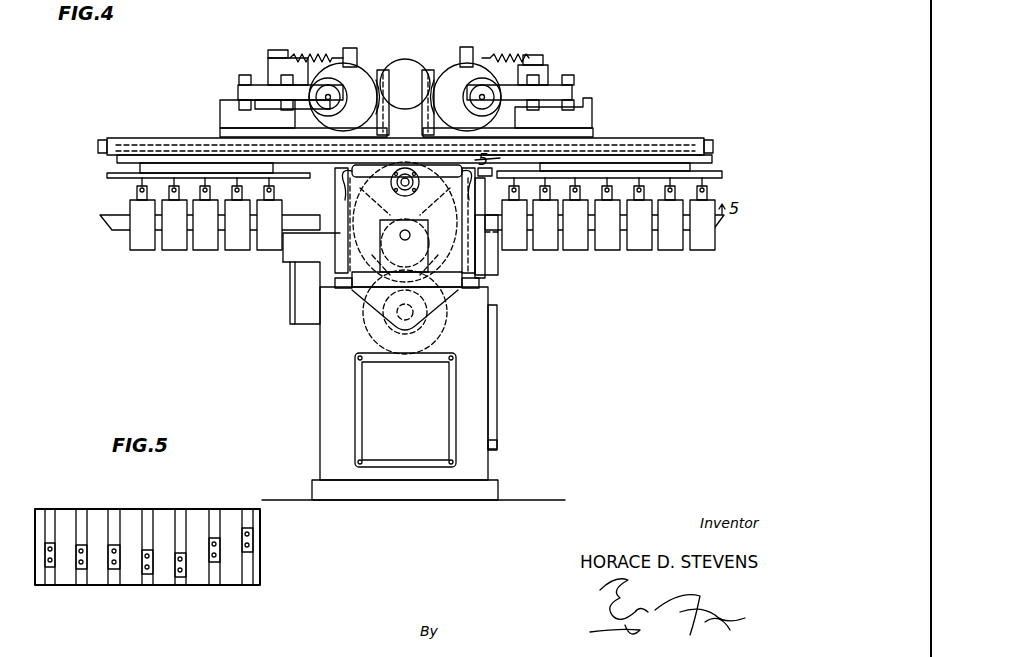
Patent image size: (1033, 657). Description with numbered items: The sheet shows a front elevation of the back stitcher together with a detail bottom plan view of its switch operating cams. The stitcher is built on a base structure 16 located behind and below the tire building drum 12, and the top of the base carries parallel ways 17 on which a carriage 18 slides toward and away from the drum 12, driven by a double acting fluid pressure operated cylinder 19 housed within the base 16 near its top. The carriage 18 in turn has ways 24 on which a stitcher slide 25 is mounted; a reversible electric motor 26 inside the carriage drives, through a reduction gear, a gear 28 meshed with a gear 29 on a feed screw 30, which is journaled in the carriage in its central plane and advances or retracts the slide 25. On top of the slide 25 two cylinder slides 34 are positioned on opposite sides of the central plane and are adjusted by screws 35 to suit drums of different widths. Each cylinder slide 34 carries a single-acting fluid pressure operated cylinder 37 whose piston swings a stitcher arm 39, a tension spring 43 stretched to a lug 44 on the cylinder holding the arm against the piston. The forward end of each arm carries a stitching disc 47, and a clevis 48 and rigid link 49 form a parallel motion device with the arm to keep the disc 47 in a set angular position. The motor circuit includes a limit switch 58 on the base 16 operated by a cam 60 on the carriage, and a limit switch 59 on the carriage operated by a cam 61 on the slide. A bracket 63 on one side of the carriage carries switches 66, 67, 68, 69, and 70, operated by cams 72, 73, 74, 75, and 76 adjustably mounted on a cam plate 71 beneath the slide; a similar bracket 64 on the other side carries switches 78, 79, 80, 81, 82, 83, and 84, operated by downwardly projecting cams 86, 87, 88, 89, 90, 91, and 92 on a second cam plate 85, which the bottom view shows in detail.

In FIG. 4, the drum 12 is at (392, 62).
In FIG. 4, the base structure 16 is at (493, 355).
In FIG. 4, the ways 17 is at (340, 288).
In FIG. 4, the carriage 18 is at (340, 235).
In FIG. 4, the double acting fluid pressure operated cylinder 19 is at (440, 330).
In FIG. 4, the ways 24 is at (407, 218).
In FIG. 4, the stitcher slide 25 is at (660, 138).
In FIG. 4, the reversible electric motor 26 is at (415, 264).
In FIG. 4, the gear 28 is at (404, 245).
In FIG. 4, the gear 29 is at (409, 222).
In FIG. 4, the feed screw 30 is at (405, 196).
In FIG. 4, the cylinder slides 34 is at (220, 128).
In FIG. 4, the adjusting screws 35 is at (98, 146).
In FIG. 4, the single-acting fluid pressure operated cylinders 37 is at (362, 68).
In FIG. 4, the stitcher arms 39 is at (268, 68).
In FIG. 4, the tension spring 43 is at (302, 52).
In FIG. 4, the lug 44 is at (350, 48).
In FIG. 4, the stitching disc 47 is at (465, 110).
In FIG. 4, the clevis 48 is at (240, 92).
In FIG. 4, the rigid link 49 is at (240, 80).
In FIG. 4, the limit switch 58 is at (305, 320).
In FIG. 4, the limit switch 59 is at (480, 225).
In FIG. 4, the cam 60 is at (292, 268).
In FIG. 4, the cam 61 is at (487, 176).
In FIG. 4, the supporting bracket 63 is at (108, 228).
In FIG. 4, the bracket 64 is at (722, 222).
In FIG. 4, the switch 66 is at (138, 250).
In FIG. 4, the switch 67 is at (170, 250).
In FIG. 4, the switch 68 is at (201, 250).
In FIG. 4, the switch 69 is at (233, 250).
In FIG. 4, the switch 70 is at (265, 250).
In FIG. 4, the cam plate 71 is at (107, 175).
In FIG. 4, the cam 72 is at (137, 188).
In FIG. 4, the cam 73 is at (169, 186).
In FIG. 4, the cam 74 is at (200, 186).
In FIG. 4, the cam 75 is at (232, 186).
In FIG. 4, the cam 76 is at (274, 186).
In FIG. 4, the switch 78 is at (515, 250).
In FIG. 4, the switch 79 is at (546, 250).
In FIG. 4, the switch 80 is at (578, 250).
In FIG. 4, the switch 81 is at (608, 250).
In FIG. 4, the switch 82 is at (640, 250).
In FIG. 4, the switch 83 is at (671, 250).
In FIG. 4, the switch 84 is at (703, 250).
In FIG. 4, the cam plate 85 is at (722, 174).
In FIG. 5, the cam plate 85 is at (235, 585).
In FIG. 4, the cam 86 is at (526, 187).
In FIG. 5, the cam 86 is at (47, 585).
In FIG. 4, the cam 87 is at (556, 187).
In FIG. 5, the cam 87 is at (79, 585).
In FIG. 4, the cam 88 is at (586, 187).
In FIG. 5, the cam 88 is at (111, 585).
In FIG. 4, the cam 89 is at (618, 187).
In FIG. 5, the cam 89 is at (145, 585).
In FIG. 4, the cam 90 is at (650, 187).
In FIG. 5, the cam 90 is at (178, 585).
In FIG. 4, the cam 91 is at (680, 187).
In FIG. 5, the cam 91 is at (212, 585).
In FIG. 4, the cam 92 is at (707, 187).
In FIG. 5, the cam 92 is at (250, 552).